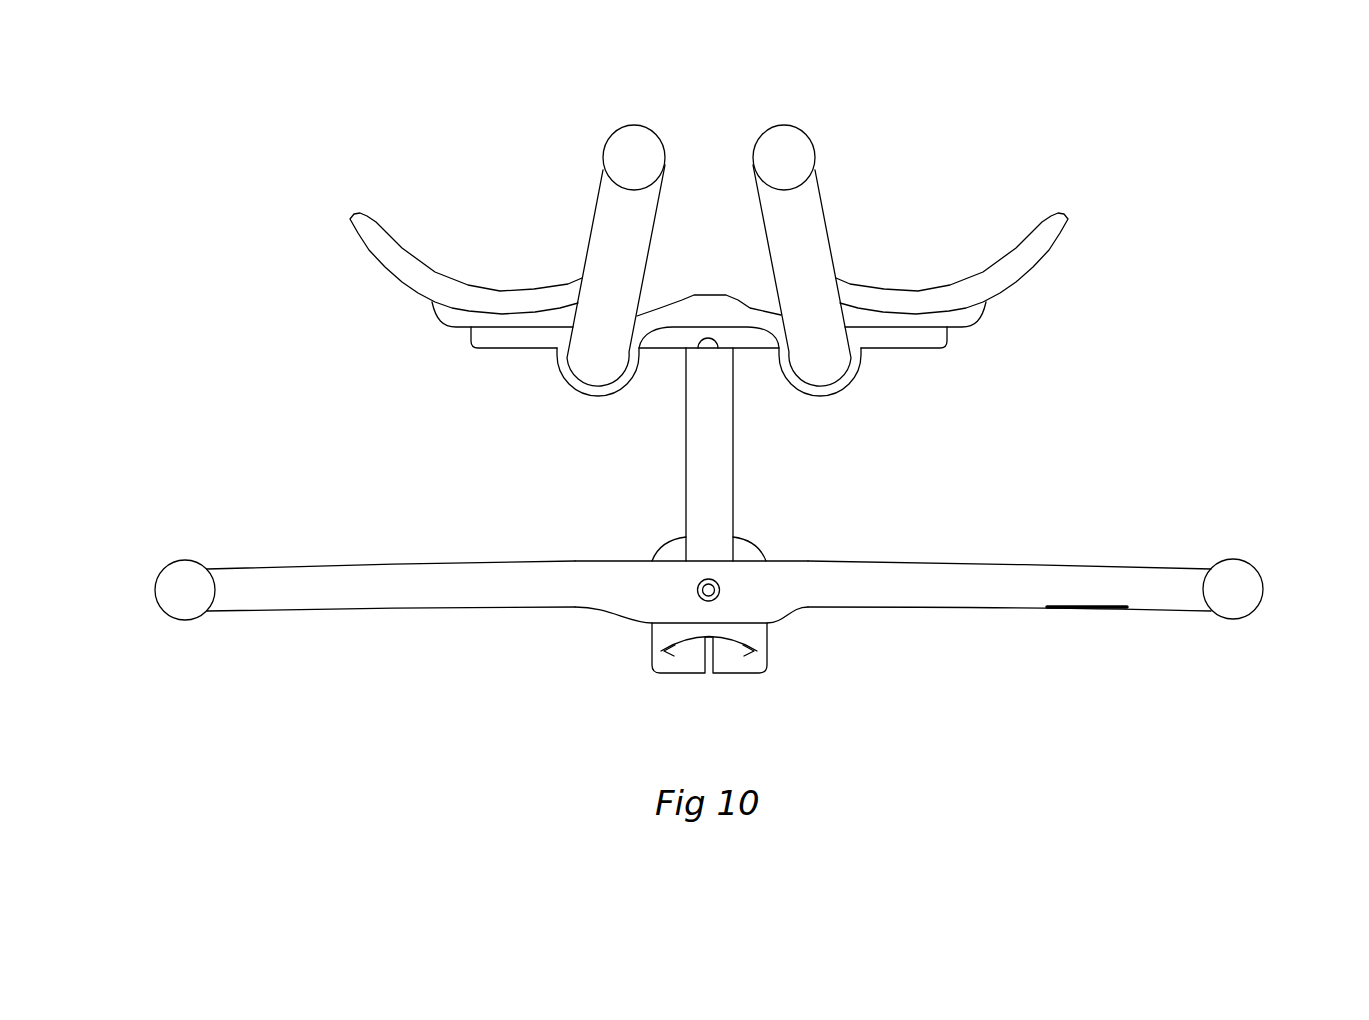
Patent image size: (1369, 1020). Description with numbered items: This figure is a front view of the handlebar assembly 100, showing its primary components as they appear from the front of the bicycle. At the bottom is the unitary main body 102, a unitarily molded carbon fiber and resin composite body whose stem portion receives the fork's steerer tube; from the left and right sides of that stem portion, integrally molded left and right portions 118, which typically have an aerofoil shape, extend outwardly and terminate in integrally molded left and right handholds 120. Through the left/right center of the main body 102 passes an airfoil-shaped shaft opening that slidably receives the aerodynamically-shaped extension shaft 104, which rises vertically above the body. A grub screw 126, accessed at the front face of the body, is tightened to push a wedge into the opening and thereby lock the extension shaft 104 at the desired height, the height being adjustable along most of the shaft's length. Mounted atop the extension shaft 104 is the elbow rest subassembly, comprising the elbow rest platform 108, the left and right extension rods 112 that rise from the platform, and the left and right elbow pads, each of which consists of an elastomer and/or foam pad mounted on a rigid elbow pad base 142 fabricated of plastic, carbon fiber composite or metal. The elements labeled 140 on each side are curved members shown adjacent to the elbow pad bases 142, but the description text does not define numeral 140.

The handlebar assembly 100 is at (242, 188).
The unitary main body 102 is at (597, 585).
The extension shaft 104 is at (717, 462).
The elbow rest platform 108 is at (688, 313).
The extension rods 112 is at (602, 230).
The left and right portions 118 is at (350, 590).
The handholds 120 is at (185, 597).
The grub screw 126 is at (718, 592).
The armrest support wing 140 is at (460, 300).
The elbow pad base 142 is at (440, 317).